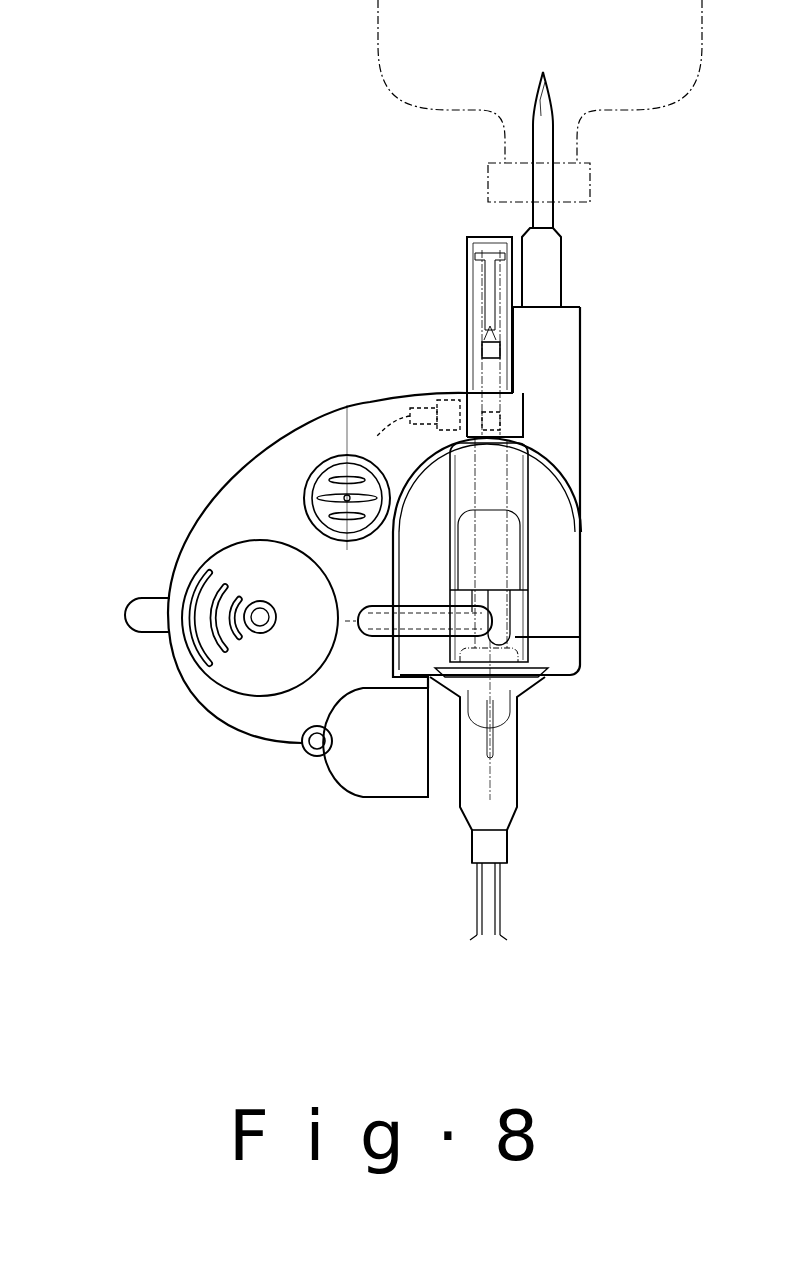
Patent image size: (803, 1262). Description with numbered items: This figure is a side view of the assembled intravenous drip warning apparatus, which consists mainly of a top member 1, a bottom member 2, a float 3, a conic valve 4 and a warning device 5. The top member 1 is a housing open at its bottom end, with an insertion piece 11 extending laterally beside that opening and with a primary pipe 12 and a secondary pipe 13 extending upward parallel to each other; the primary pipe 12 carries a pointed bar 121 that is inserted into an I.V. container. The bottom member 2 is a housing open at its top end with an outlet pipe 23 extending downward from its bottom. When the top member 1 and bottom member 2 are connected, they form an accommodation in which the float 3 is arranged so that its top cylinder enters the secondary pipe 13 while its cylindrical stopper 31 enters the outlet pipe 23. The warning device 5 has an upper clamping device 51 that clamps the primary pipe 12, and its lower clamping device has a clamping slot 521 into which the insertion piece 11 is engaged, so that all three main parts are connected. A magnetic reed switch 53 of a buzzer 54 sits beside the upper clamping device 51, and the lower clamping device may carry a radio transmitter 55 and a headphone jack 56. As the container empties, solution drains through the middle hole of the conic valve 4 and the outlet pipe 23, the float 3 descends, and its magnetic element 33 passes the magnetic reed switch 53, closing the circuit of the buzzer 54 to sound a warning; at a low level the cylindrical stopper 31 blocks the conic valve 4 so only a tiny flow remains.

The top member 1 is at (592, 562).
The bottom member 2 is at (590, 670).
The float 3 is at (517, 485).
The cylindrical stopper 31 is at (493, 593).
The conic valve 4 is at (520, 683).
The warning device 5 is at (193, 507).
The insertion piece 11 is at (355, 625).
The primary pipe 12 is at (557, 392).
The pointed bar 121 is at (573, 252).
The secondary pipe 13 is at (460, 288).
The outlet pipe 23 is at (497, 773).
The magnetic element 33 is at (488, 348).
The upper clamping device 51 is at (515, 397).
The magnetic reed switch 53 is at (443, 412).
The buzzer 54 is at (315, 470).
The radio transmitter 55 is at (382, 752).
The clamping slot 521 is at (382, 630).
The headphone jack 56 is at (257, 618).